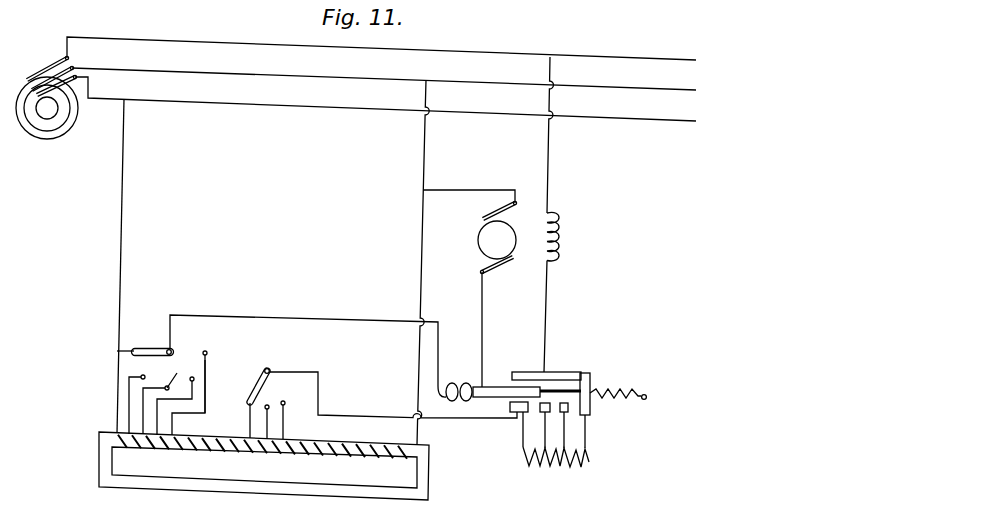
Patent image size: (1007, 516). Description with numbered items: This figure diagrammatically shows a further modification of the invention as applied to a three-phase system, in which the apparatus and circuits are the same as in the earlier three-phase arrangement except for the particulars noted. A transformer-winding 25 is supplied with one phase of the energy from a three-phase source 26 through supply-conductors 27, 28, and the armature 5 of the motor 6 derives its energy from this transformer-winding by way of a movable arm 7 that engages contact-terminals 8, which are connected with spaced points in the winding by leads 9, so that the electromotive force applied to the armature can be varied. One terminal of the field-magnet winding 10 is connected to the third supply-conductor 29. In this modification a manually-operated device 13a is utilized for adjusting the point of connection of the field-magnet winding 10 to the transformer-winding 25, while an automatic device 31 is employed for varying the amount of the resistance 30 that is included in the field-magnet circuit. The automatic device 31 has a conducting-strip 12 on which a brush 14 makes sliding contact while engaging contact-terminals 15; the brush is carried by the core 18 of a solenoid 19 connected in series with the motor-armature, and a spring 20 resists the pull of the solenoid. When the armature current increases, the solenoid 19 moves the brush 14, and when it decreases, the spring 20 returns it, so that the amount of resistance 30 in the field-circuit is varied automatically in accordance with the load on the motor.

The armature 5 is at (477, 243).
The motor 6 is at (525, 256).
The movable arm 7 is at (149, 343).
The contact-terminals 8 is at (203, 356).
The leads 9 is at (207, 389).
The field-magnet winding 10 is at (556, 246).
The conducting-strip 12 is at (527, 369).
The manually-operated device 13a is at (262, 398).
The brush 14 is at (600, 367).
The contact-terminals 15 is at (518, 418).
The core 18 is at (498, 385).
The solenoid 19 is at (460, 378).
The spring 20 is at (620, 411).
The transformer-winding 25 is at (227, 425).
The three-phase source 26 is at (60, 140).
The supply-conductor 27 is at (282, 107).
The supply-conductor 28 is at (282, 78).
The third supply-conductor 29 is at (283, 46).
The resistance 30 is at (559, 468).
The automatic device 31 is at (557, 386).